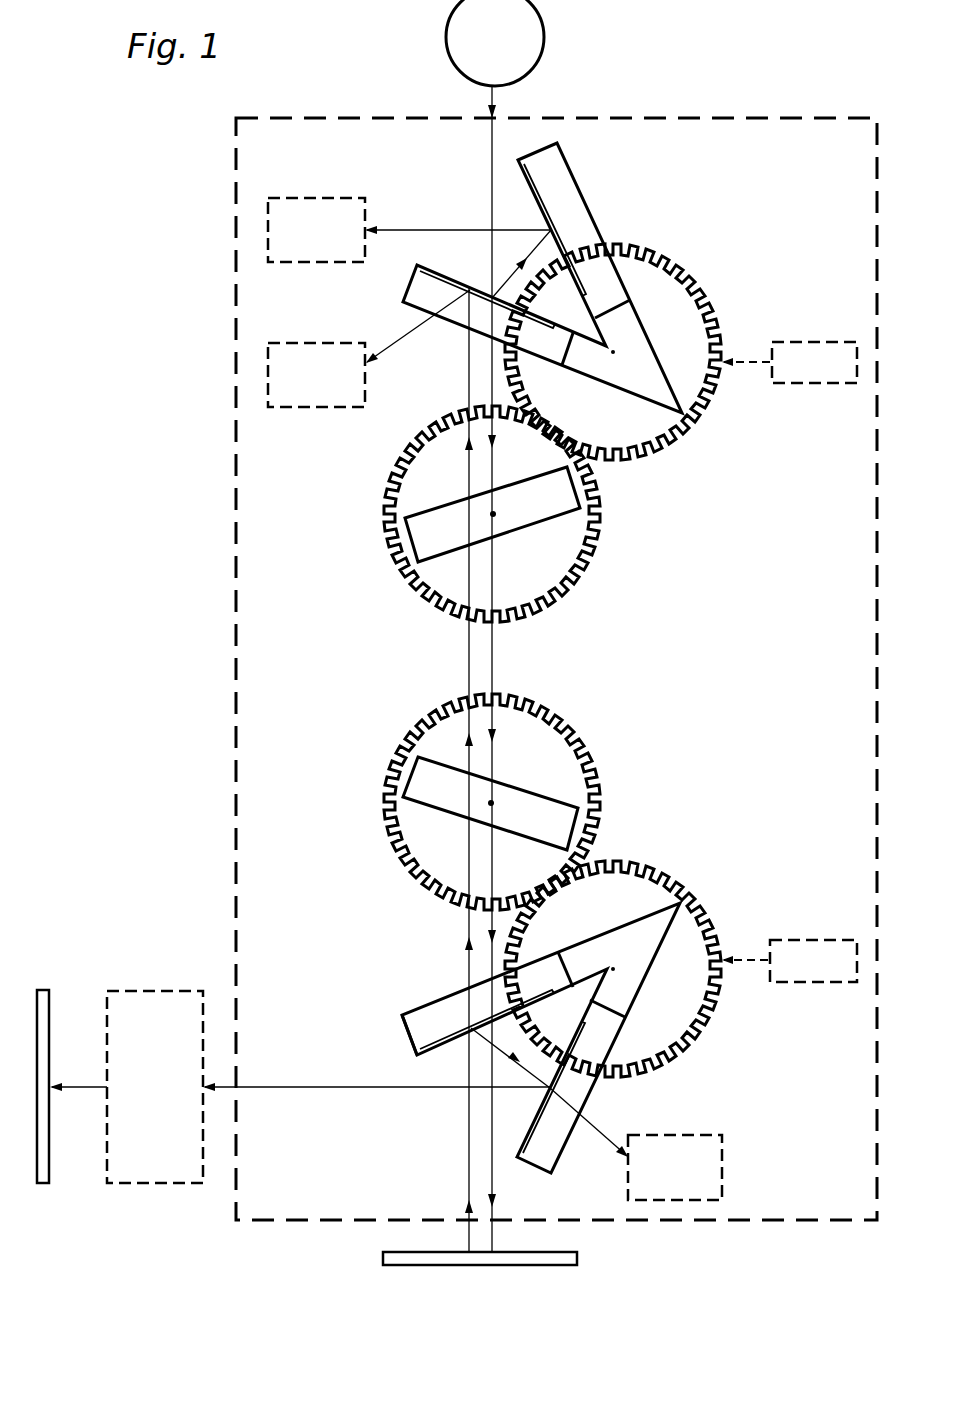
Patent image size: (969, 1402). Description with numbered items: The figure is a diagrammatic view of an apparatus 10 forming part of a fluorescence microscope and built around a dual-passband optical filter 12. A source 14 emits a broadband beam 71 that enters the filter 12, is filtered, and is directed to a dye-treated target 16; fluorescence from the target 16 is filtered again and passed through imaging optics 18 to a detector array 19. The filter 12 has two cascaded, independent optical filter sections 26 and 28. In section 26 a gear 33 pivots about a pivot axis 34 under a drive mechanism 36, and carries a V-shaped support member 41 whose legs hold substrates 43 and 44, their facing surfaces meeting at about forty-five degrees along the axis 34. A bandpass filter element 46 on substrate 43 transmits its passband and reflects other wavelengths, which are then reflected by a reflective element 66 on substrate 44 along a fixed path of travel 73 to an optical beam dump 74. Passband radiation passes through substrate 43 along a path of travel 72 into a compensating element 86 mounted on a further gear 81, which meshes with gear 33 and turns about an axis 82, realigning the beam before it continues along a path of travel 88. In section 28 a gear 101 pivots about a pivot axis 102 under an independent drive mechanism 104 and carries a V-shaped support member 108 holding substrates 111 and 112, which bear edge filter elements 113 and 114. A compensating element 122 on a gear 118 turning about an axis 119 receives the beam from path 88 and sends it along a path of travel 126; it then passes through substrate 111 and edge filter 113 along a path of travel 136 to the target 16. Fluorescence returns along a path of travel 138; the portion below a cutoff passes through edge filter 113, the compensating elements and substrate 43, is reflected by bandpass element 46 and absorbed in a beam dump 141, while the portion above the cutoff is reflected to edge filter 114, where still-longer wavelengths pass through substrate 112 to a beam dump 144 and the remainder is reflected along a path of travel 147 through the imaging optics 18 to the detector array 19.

The apparatus 10 is at (690, 52).
The dual-passband optical filter 12 is at (592, 108).
The source 14 is at (447, 37).
The target 16 is at (580, 1268).
The imaging optics 18 is at (155, 1184).
The detector array 19 is at (50, 1160).
The optical filter section 26 is at (501, 514).
The optical filter section 28 is at (495, 847).
The gear 33 is at (690, 437).
The pivot axis 34 is at (611, 355).
The drive mechanism 36 is at (822, 392).
The V-shaped support member 41 is at (655, 348).
The substrate 43 is at (406, 308).
The substrate 44 is at (585, 196).
The bandpass filter element 46 is at (441, 273).
The reflective element 66 is at (532, 190).
The input beam 71 is at (491, 160).
The path of travel 72 is at (467, 382).
The path of travel 73 is at (421, 228).
The optical beam dump 74 is at (320, 196).
The gear 81 is at (385, 512).
The axis 82 is at (497, 513).
The compensating element 86 is at (448, 503).
The path of travel 88 is at (494, 655).
The gear 101 is at (670, 882).
The pivot axis 102 is at (611, 966).
The drive mechanism 104 is at (815, 938).
The V-shaped support member 108 is at (645, 984).
The substrate 111 is at (427, 1005).
The substrate 112 is at (603, 1093).
The edge filter element 113 is at (403, 1050).
The edge filter element 114 is at (523, 1127).
The gear 118 is at (385, 810).
The axis 119 is at (496, 804).
The compensating element 122 is at (510, 786).
The path of travel 126 is at (494, 853).
The path of travel 136 is at (493, 1183).
The path of travel 138 is at (467, 1172).
The beam dump 141 is at (315, 412).
The beam dump 144 is at (724, 1181).
The path of travel 147 is at (333, 1089).